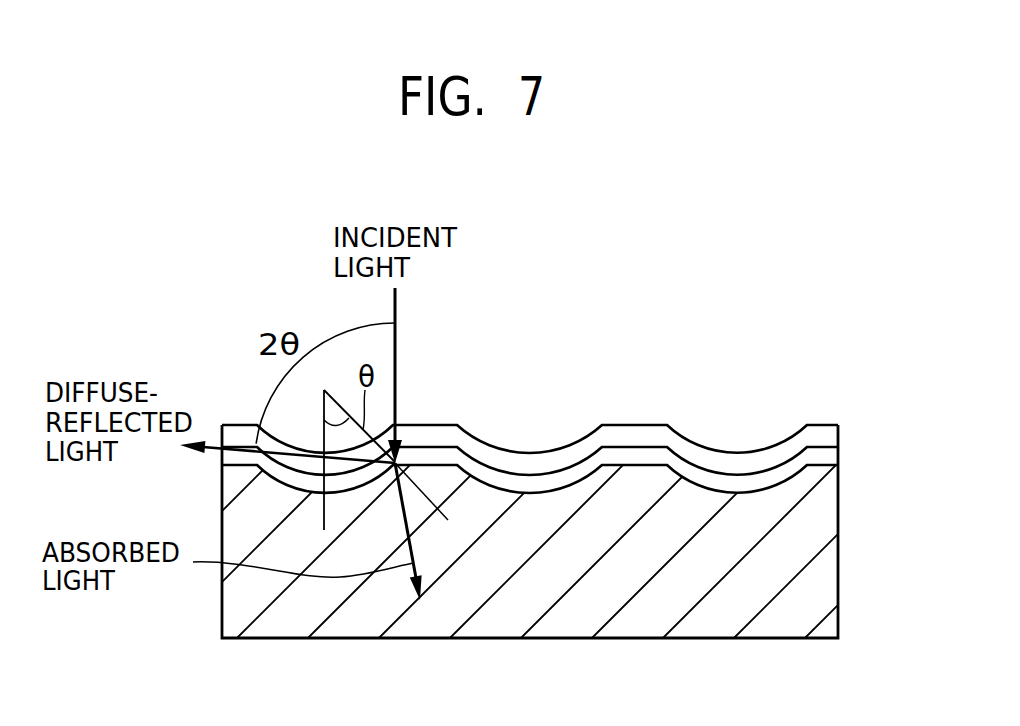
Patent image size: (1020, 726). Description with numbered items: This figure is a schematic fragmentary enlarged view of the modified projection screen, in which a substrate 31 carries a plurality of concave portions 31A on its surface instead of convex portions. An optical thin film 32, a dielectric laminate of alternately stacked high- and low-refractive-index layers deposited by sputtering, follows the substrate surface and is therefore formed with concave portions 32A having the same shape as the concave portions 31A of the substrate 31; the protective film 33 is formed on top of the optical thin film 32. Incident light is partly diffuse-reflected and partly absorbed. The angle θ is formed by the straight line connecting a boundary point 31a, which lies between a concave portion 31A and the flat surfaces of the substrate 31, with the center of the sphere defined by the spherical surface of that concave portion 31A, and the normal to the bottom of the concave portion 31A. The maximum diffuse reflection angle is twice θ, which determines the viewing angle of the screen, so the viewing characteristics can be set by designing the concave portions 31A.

The substrate 31 is at (763, 624).
The boundary point 31a is at (398, 462).
The concave portion 31A is at (735, 492).
The optical thin film 32 is at (838, 460).
The concave portion of optical thin film 32A is at (530, 452).
The protective film 33 is at (838, 433).